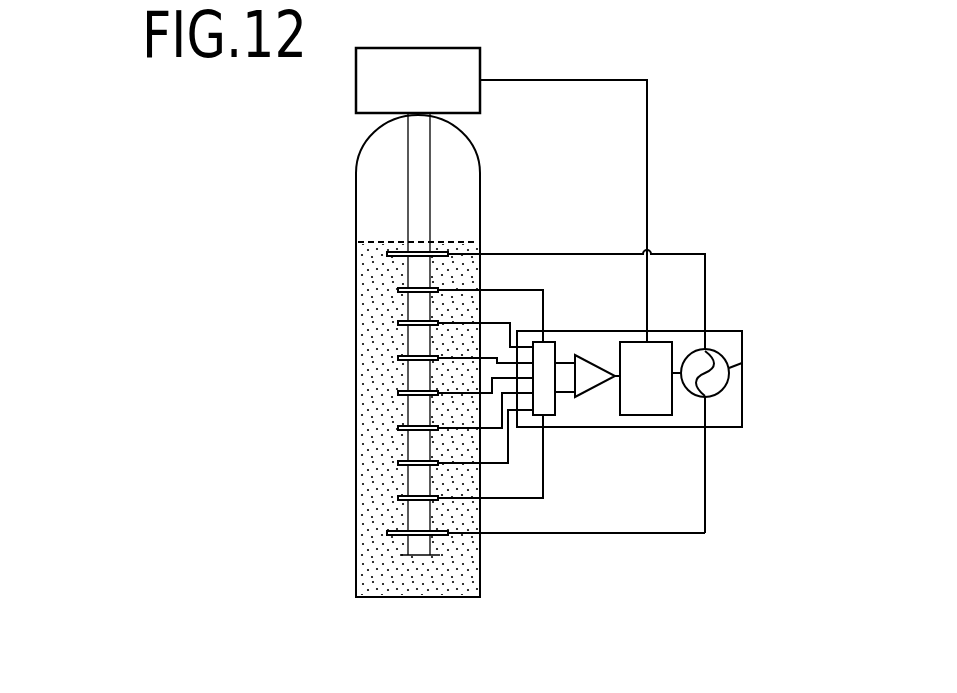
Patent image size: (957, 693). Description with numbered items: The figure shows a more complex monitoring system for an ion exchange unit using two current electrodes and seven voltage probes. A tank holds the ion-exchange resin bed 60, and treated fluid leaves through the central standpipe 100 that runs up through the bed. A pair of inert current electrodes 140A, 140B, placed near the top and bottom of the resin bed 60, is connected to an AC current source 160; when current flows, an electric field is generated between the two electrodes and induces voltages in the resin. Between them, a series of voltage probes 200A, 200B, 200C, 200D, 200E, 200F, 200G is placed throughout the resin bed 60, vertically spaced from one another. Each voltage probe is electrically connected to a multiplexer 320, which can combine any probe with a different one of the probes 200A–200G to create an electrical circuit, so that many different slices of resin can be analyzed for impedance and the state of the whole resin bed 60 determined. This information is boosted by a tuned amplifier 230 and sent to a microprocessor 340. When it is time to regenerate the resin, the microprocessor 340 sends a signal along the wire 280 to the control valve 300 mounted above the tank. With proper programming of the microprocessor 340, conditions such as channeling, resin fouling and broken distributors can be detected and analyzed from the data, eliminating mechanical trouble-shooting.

The ion-exchange resin bed 60 is at (457, 278).
The standpipe 100 is at (432, 586).
The current electrode 140A is at (388, 253).
The current electrode 140B is at (390, 537).
The AC current source 160 is at (742, 363).
The voltage probe 200A is at (397, 290).
The voltage probe 200B is at (397, 323).
The voltage probe 200C is at (397, 358).
The voltage probe 200D is at (397, 393).
The voltage probe 200E is at (397, 428).
The voltage probe 200F is at (397, 463).
The voltage probe 200G is at (397, 498).
The tuned amplifier 230 is at (593, 390).
The wire 280 is at (647, 137).
The control valve 300 is at (482, 53).
The multiplexer 320 is at (558, 418).
The microprocessor 340 is at (662, 362).